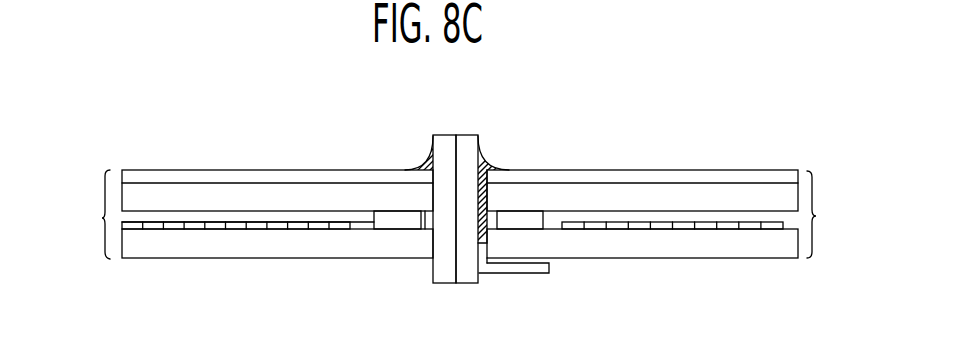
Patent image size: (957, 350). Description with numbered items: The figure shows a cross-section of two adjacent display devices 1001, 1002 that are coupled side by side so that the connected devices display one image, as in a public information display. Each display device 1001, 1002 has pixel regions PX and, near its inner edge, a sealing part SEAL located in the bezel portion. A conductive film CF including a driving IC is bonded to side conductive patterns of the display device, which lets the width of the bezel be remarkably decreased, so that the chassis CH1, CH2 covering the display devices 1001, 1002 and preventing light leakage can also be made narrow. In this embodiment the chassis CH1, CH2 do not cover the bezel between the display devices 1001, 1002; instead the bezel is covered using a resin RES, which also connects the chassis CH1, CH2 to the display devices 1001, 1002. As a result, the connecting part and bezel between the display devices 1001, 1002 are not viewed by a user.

The display device 1001 is at (247, 214).
The display device 1002 is at (673, 216).
The pixel region PX is at (342, 229).
The sealing part SEAL is at (400, 229).
The chassis CH1 is at (440, 142).
The chassis CH2 is at (471, 142).
The resin RES is at (420, 160).
The conductive film CF is at (523, 273).